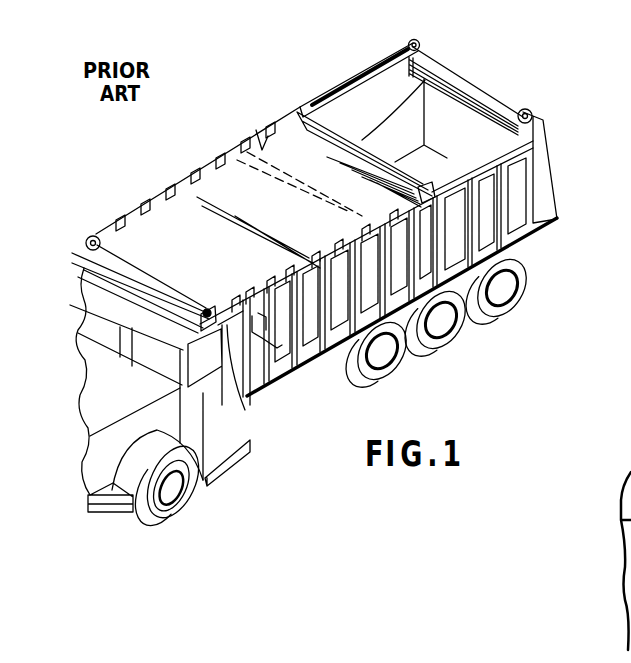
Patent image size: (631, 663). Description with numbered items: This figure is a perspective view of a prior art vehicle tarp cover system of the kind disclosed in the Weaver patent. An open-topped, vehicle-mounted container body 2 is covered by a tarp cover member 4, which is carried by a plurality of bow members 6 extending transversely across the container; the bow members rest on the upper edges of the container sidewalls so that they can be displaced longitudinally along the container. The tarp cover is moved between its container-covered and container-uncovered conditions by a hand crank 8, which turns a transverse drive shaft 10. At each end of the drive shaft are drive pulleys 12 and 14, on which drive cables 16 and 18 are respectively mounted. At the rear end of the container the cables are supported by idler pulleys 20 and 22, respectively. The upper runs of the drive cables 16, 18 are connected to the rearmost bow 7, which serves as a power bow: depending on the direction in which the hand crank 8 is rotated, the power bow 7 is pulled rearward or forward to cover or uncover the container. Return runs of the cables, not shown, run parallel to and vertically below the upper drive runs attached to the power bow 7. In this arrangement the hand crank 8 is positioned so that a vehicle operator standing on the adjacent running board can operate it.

The container body 2 is at (363, 97).
The tarp cover member 4 is at (190, 203).
The bow members 6 is at (256, 130).
The rearmost bow 7 is at (455, 95).
The hand crank 8 is at (257, 332).
The transverse drive shaft 10 is at (95, 262).
The drive pulley 12 is at (87, 236).
The drive pulley 14 is at (235, 400).
The drive cable 16 is at (313, 103).
The drive cable 18 is at (525, 146).
The idler pulley 20 is at (418, 46).
The idler pulley 22 is at (533, 111).